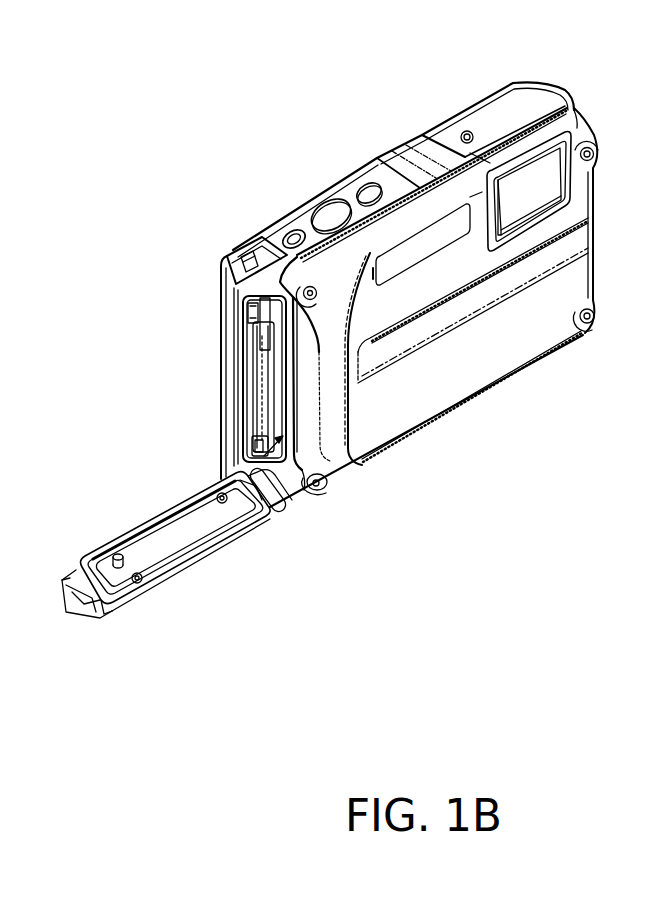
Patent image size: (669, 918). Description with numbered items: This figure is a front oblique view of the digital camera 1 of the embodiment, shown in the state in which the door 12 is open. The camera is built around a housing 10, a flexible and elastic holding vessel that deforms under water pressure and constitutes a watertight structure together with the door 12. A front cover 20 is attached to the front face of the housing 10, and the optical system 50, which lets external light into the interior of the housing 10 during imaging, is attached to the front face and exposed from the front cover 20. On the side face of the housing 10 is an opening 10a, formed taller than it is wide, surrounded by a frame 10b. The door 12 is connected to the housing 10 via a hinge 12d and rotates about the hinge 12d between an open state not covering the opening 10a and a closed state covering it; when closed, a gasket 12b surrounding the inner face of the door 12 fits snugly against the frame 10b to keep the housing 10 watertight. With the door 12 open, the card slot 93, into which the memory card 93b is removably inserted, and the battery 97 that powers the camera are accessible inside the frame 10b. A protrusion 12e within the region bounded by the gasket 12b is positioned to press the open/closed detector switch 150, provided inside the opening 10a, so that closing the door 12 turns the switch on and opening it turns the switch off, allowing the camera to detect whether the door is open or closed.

The digital camera 1 is at (373, 108).
The housing 10 is at (414, 149).
The opening 10a is at (327, 473).
The frame 10b is at (298, 410).
The door 12 is at (105, 618).
The gasket 12b is at (187, 580).
The hinge 12d is at (277, 517).
The protrusion 12e is at (110, 556).
The front cover 20 is at (487, 360).
The optical system 50 is at (537, 187).
The card slot 93 is at (248, 352).
The memory card 93b is at (257, 393).
The battery 97 is at (255, 442).
The open/closed detector switch 150 is at (247, 320).